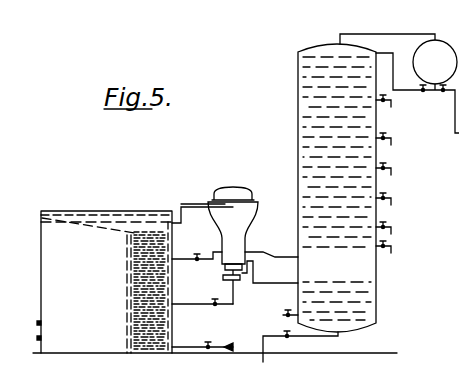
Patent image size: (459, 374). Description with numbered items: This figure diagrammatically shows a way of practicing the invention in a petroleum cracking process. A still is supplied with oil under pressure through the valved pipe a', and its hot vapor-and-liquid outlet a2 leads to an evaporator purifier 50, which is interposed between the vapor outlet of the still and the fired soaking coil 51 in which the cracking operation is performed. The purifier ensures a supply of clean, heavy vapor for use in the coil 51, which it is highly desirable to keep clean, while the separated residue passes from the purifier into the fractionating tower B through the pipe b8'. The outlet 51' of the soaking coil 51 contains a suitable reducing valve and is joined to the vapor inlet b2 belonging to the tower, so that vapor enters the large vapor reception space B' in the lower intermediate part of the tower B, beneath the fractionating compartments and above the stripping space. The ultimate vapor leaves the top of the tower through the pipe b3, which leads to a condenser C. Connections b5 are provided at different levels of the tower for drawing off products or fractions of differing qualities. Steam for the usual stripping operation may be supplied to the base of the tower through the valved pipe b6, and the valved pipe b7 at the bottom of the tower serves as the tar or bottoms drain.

The valved pipe a' is at (202, 338).
The hot vapor-and-liquid outlet a2 is at (195, 205).
The evaporator purifier 50 is at (237, 222).
The fired soaking coil 51 is at (183, 290).
The outlet of the soaking coil 51' is at (197, 248).
The vapor inlet pipe b2 is at (283, 262).
The vapor outlet pipe b3 is at (338, 39).
The draw-off connections b5 is at (388, 170).
The valved steam pipe b6 is at (284, 319).
The tar or bottoms drain b7 is at (306, 345).
The residue pipe b8' is at (270, 275).
The fractionating tower B is at (337, 188).
The vapor reception space B' is at (337, 289).
The condenser C is at (435, 62).